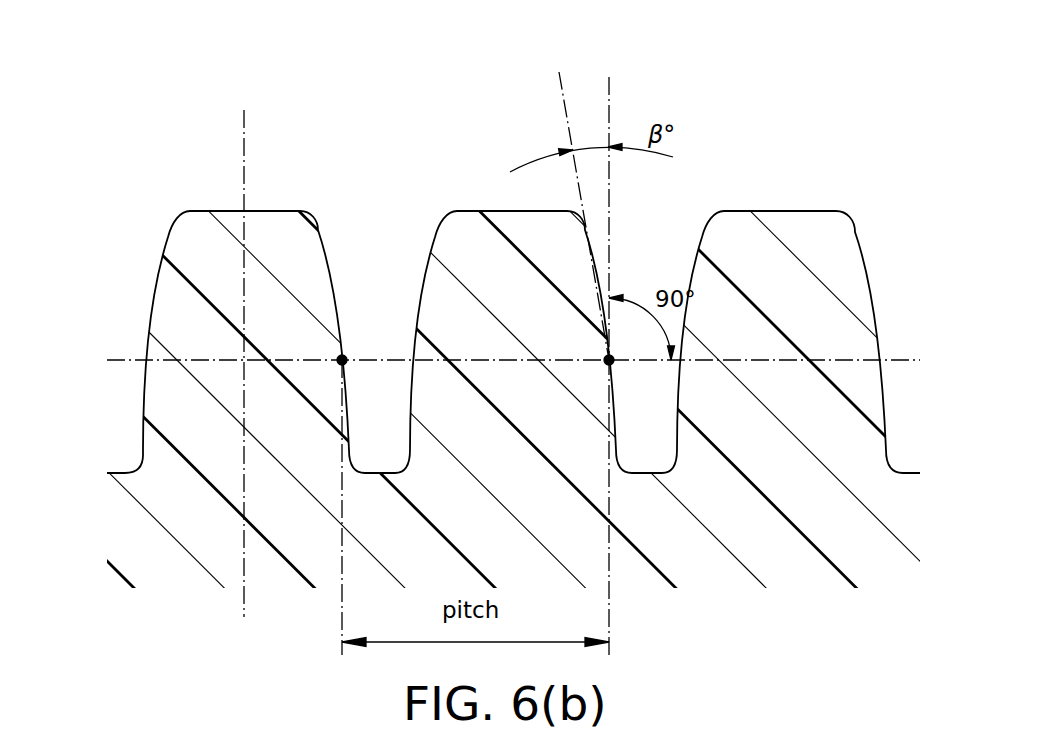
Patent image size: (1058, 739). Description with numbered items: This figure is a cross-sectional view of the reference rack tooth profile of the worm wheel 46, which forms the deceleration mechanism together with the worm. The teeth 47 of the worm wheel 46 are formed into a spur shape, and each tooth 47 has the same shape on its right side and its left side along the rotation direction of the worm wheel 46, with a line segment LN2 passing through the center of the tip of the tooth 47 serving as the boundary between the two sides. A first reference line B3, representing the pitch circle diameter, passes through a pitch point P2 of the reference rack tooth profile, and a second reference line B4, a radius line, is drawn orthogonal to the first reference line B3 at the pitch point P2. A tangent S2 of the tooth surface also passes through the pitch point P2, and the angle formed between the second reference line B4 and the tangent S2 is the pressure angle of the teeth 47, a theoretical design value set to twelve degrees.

The worm wheel 46 is at (763, 533).
The tooth 47 is at (465, 320).
The pitch point P2 is at (343, 362).
The first reference line B3 is at (130, 360).
The second reference line B4 is at (610, 107).
The line segment LN2 is at (243, 163).
The tangent S2 is at (570, 100).